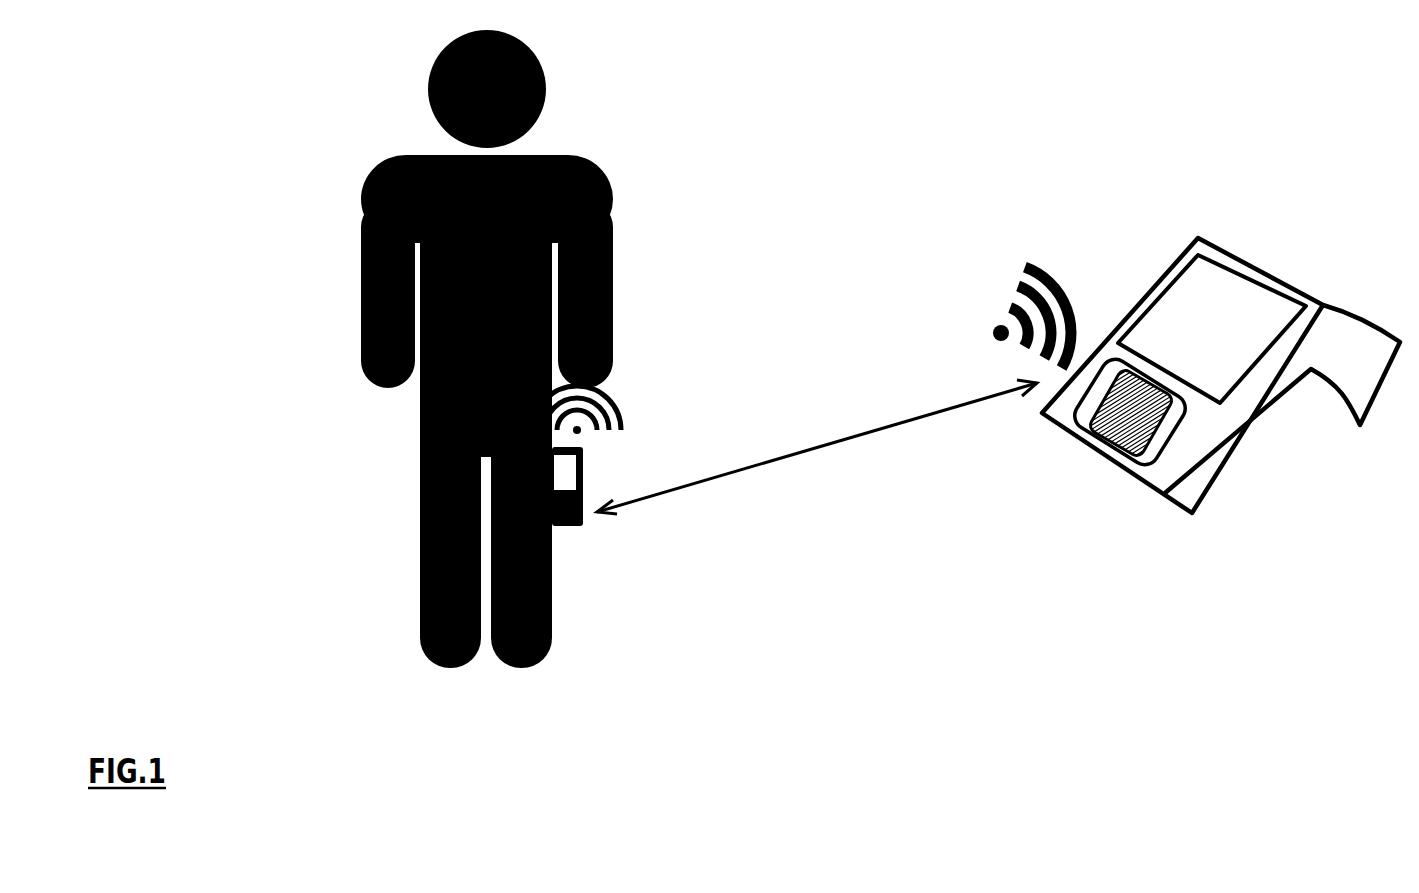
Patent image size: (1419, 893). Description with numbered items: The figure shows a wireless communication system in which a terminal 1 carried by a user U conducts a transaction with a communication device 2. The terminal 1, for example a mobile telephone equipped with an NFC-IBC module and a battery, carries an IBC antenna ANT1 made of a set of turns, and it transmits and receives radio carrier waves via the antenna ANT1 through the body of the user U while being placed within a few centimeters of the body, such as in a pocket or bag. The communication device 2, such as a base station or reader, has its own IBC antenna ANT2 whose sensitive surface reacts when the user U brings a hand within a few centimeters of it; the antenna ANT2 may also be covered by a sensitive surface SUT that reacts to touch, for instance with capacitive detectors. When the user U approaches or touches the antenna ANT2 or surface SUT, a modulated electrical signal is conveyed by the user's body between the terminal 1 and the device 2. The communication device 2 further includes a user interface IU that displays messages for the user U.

The terminal 1 is at (577, 528).
The communication device 2 is at (1315, 277).
The IBC antenna ANT1 is at (581, 432).
The IBC antenna ANT2 is at (1180, 420).
The sensitive surface SUT is at (1128, 423).
The user interface IU is at (1250, 342).
The user U is at (497, 732).